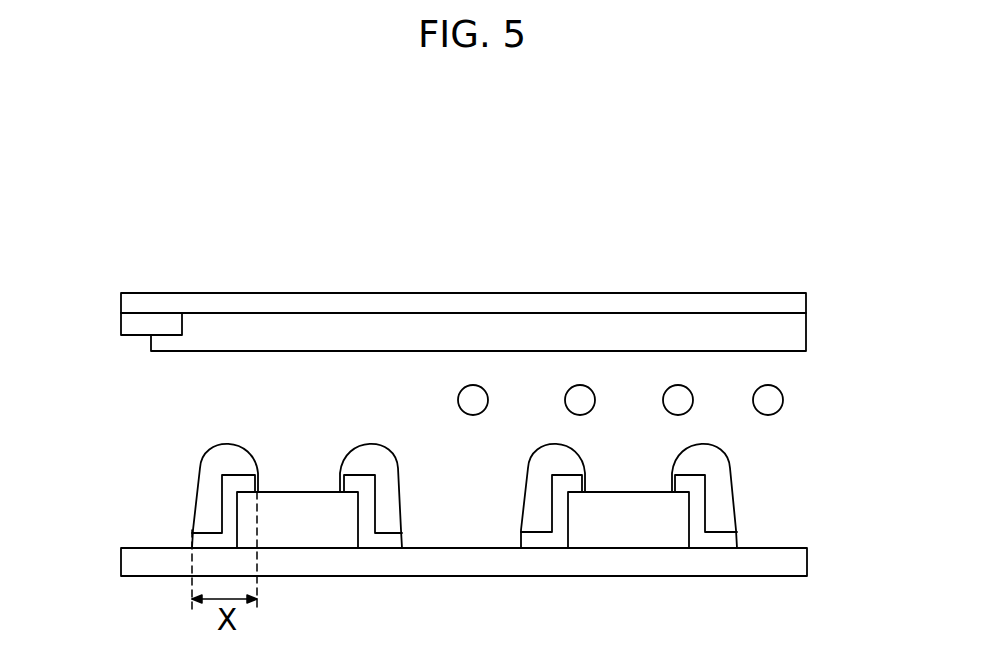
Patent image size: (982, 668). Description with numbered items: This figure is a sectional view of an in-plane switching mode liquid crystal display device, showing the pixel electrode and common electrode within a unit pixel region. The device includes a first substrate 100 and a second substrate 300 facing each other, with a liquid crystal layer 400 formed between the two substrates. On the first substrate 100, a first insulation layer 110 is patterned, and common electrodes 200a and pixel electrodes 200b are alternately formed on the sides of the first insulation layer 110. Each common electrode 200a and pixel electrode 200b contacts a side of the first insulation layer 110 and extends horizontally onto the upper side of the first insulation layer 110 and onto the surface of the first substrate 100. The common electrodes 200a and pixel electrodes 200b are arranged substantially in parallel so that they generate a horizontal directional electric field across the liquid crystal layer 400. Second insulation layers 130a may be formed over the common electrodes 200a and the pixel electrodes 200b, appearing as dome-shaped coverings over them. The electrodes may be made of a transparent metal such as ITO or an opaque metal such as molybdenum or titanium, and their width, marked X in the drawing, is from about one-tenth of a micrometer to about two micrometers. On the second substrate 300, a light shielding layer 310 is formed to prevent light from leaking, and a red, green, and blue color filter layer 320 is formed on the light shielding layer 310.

The first substrate 100 is at (790, 562).
The first insulation layer 110 is at (302, 532).
The second insulation layer 130a is at (227, 455).
The common electrode 200a is at (217, 540).
The pixel electrode 200b is at (383, 532).
The second substrate 300 is at (790, 301).
The light shielding layer 310 is at (135, 328).
The RGB color filter layer 320 is at (790, 333).
The liquid crystal layer 400 is at (768, 400).